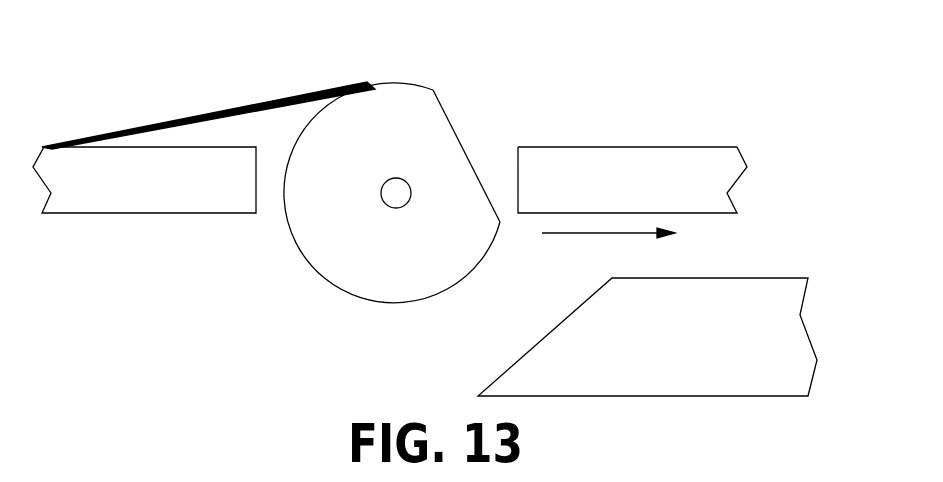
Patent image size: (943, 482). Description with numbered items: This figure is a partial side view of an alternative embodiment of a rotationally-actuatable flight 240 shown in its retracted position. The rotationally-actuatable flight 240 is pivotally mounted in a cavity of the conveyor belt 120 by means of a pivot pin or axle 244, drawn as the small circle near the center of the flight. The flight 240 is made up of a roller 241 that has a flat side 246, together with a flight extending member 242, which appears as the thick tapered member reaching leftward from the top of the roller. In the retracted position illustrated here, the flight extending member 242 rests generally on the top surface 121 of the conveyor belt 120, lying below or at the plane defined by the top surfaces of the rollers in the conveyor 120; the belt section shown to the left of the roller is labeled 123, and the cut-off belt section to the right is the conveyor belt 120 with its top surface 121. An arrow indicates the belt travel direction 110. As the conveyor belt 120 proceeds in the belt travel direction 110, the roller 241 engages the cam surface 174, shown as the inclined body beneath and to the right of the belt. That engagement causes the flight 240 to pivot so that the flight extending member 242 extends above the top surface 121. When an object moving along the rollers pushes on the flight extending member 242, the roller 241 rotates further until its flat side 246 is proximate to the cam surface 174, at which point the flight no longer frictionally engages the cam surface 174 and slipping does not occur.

The belt travel direction 110 is at (609, 243).
The conveyor belt 120 is at (632, 145).
The top surface 121 is at (559, 140).
The support base 123 is at (176, 220).
The cam surface 174 is at (766, 272).
The rotationally-actuatable flight 240 is at (390, 163).
The roller 241 is at (331, 284).
The flight extending member 242 is at (54, 137).
The pivot pin or axle 244 is at (388, 172).
The flat side 246 is at (453, 115).